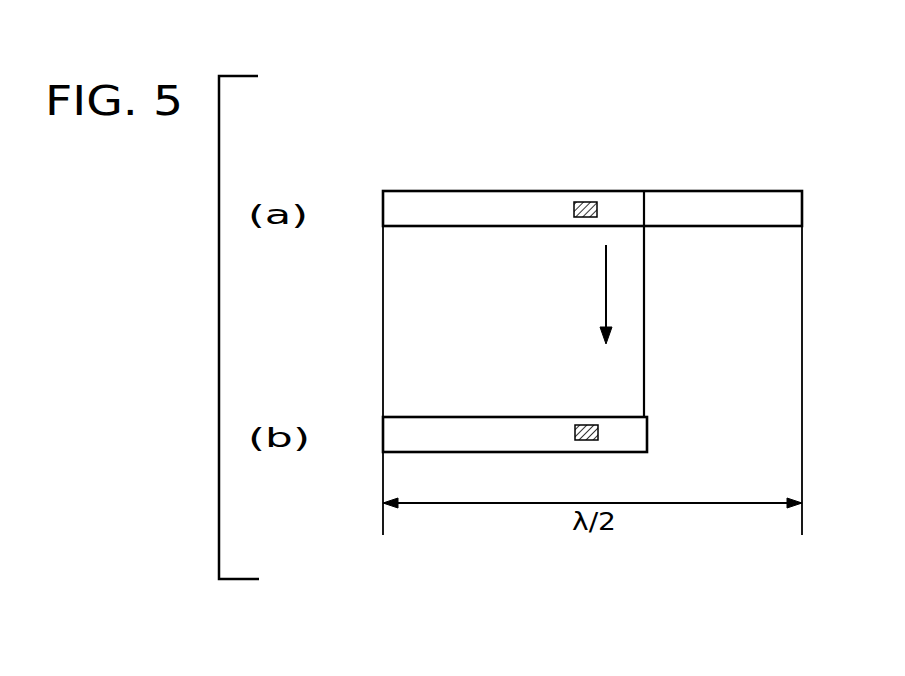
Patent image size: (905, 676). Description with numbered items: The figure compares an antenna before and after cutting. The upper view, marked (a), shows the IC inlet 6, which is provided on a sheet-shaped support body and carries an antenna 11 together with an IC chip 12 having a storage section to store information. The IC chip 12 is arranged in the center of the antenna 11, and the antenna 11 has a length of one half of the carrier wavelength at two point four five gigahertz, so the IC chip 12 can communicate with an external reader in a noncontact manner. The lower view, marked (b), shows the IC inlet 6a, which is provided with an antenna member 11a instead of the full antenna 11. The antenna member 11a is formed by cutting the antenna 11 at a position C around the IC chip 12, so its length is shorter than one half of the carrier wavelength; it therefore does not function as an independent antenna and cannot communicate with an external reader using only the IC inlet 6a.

The IC inlet 6 is at (592, 144).
The antenna 11 is at (588, 113).
The IC chip 12 is at (584, 202).
The IC inlet 6a is at (515, 370).
The antenna member 11a is at (590, 336).
The cutting position C is at (644, 191).